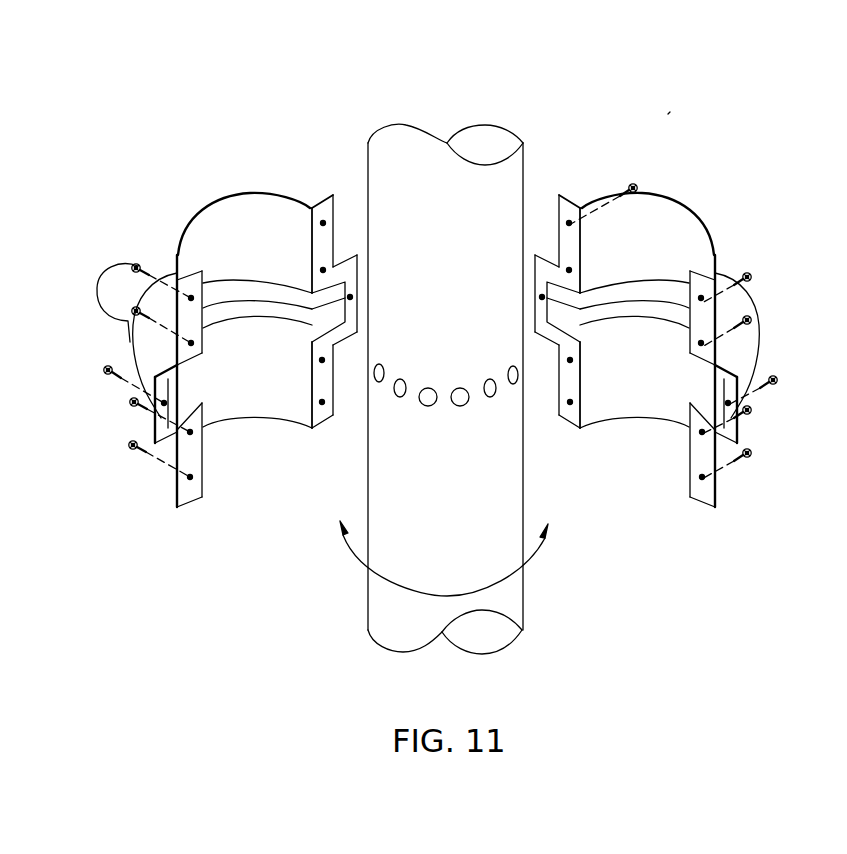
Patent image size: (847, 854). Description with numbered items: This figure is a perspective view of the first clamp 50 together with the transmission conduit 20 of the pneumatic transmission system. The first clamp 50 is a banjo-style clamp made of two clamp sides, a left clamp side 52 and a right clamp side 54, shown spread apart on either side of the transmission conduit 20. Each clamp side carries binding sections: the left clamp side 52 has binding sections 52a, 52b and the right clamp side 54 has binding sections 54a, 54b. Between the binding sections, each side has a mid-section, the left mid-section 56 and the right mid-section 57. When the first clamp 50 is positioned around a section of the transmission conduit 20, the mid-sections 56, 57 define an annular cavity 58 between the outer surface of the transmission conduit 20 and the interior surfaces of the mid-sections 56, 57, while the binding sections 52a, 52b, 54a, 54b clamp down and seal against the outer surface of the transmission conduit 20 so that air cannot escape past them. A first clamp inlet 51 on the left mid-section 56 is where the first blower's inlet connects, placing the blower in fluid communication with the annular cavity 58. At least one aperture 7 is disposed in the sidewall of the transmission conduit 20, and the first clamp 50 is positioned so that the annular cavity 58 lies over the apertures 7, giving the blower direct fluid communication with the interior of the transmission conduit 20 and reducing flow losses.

The aperture 7 is at (380, 382).
The transmission conduit 20 is at (526, 158).
The first clamp 50 is at (672, 108).
The first clamp inlet 51 is at (132, 265).
The left clamp side 52 is at (283, 182).
The binding section 52a is at (211, 200).
The binding section 52b is at (177, 489).
The right clamp side 54 is at (613, 186).
The binding section 54a is at (689, 203).
The binding section 54b is at (718, 491).
The left mid-section 56 is at (124, 355).
The right mid-section 57 is at (762, 352).
The annular cavity 58 is at (266, 322).